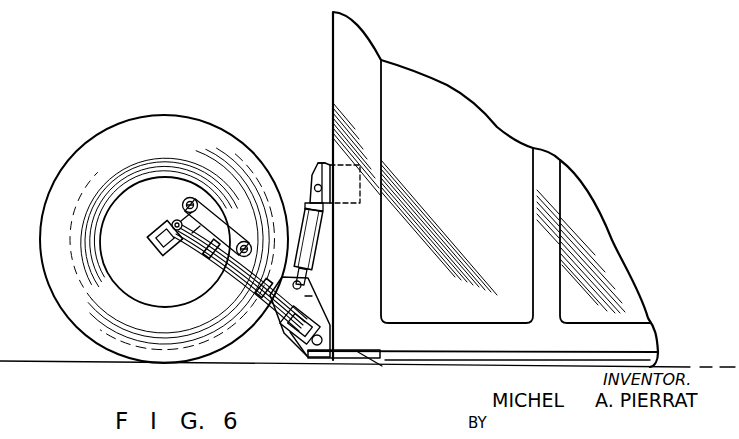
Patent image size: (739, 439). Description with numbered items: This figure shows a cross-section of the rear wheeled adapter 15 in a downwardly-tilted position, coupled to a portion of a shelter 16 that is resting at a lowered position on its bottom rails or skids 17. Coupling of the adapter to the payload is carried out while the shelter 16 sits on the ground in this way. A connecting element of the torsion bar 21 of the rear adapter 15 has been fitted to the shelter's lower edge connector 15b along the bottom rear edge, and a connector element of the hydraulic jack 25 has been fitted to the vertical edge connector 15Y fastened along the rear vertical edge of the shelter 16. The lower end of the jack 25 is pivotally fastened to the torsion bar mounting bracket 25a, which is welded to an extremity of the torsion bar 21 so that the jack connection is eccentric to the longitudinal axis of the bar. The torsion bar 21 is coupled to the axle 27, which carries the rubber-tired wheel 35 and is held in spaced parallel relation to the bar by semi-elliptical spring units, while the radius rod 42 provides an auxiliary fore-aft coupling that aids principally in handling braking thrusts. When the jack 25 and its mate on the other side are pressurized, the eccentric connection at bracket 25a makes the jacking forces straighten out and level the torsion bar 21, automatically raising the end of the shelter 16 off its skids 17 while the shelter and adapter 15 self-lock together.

The rear wheeled adapter 15 is at (220, 100).
The vertical edge connector 15Y is at (320, 157).
The lower edge connector 15b is at (330, 359).
The shelter 16 is at (447, 138).
The bottom rails or skids 17 is at (438, 358).
The torsion bar 21 is at (288, 348).
The hydraulic jack 25 is at (318, 257).
The torsion bar mounting bracket 25a is at (303, 293).
The axle 27 is at (160, 246).
The rubber-tired wheel 35 is at (106, 142).
The radius rod 42 is at (217, 223).